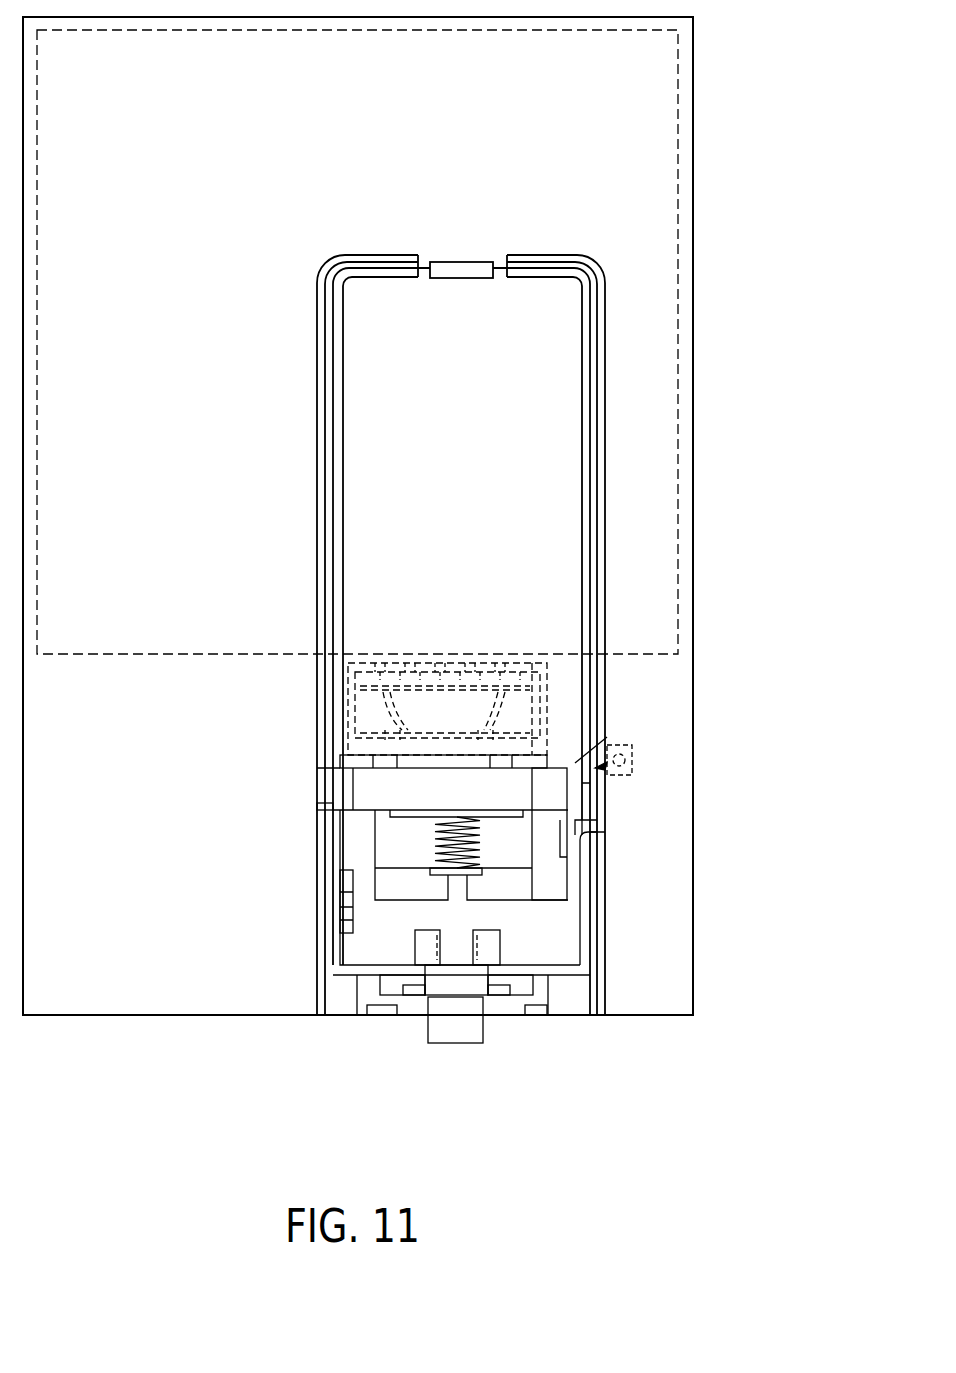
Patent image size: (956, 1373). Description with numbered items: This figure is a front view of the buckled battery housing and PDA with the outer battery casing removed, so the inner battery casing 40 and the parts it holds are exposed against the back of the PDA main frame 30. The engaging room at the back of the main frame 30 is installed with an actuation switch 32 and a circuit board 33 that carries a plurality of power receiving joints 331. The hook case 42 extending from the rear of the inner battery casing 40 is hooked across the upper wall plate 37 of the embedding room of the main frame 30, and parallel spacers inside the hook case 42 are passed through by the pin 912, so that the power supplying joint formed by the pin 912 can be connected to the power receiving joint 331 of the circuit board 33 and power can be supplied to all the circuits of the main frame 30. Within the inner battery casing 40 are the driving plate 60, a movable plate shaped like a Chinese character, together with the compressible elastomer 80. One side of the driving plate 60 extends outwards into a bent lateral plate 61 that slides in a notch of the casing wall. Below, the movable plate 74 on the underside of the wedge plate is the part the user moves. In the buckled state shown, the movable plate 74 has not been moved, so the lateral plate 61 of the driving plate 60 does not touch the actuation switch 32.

The PDA main frame 30 is at (695, 188).
The circuit board 33 is at (688, 538).
The power receiving joint 331 is at (604, 610).
The inner battery casing 40 is at (607, 383).
The pin 912 is at (606, 658).
The hook case 42 is at (610, 688).
The upper wall plate 37 is at (625, 748).
The actuation switch 32 is at (632, 765).
The lateral plate 61 is at (602, 804).
The driving plate 60 is at (572, 898).
The elastomer 80 is at (470, 855).
The movable plate 74 is at (478, 1022).